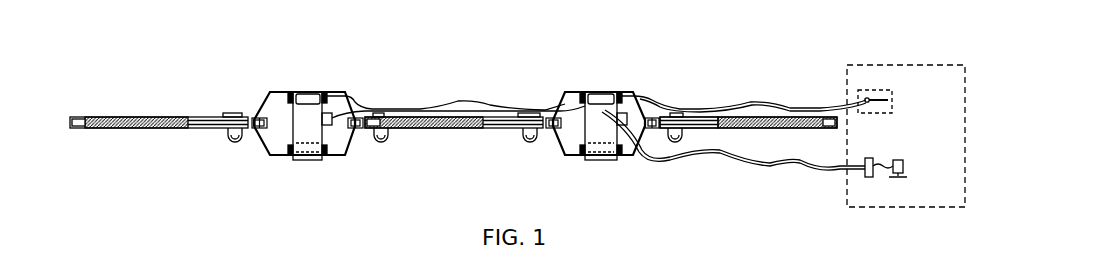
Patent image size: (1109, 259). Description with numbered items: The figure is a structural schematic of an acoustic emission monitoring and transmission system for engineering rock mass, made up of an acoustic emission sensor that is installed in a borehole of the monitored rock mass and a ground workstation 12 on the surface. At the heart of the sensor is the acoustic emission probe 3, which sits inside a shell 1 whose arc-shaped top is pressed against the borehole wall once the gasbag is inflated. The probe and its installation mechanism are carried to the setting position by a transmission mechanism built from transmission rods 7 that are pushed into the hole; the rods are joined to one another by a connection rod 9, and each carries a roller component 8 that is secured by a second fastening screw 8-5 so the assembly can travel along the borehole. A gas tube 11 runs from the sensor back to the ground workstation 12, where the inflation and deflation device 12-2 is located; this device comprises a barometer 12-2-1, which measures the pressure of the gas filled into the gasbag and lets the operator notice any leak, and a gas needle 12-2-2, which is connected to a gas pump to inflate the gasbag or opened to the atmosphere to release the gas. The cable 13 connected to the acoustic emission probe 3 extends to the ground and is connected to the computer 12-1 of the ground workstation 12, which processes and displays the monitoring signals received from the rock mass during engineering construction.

The shell 1 is at (306, 130).
The acoustic emission probe 3 is at (310, 122).
The transmission rod 7 is at (718, 117).
The roller component 8 is at (680, 135).
The second fastening screw 8-5 is at (530, 113).
The connection rod 9 is at (696, 117).
The gas tube 11 is at (771, 110).
The ground workstation 12 is at (953, 75).
The computer 12-1 is at (870, 177).
The inflation and deflation device 12-2 is at (905, 95).
The barometer 12-2-1 is at (868, 98).
The gas needle 12-2-2 is at (947, 122).
The cable 13 is at (773, 162).